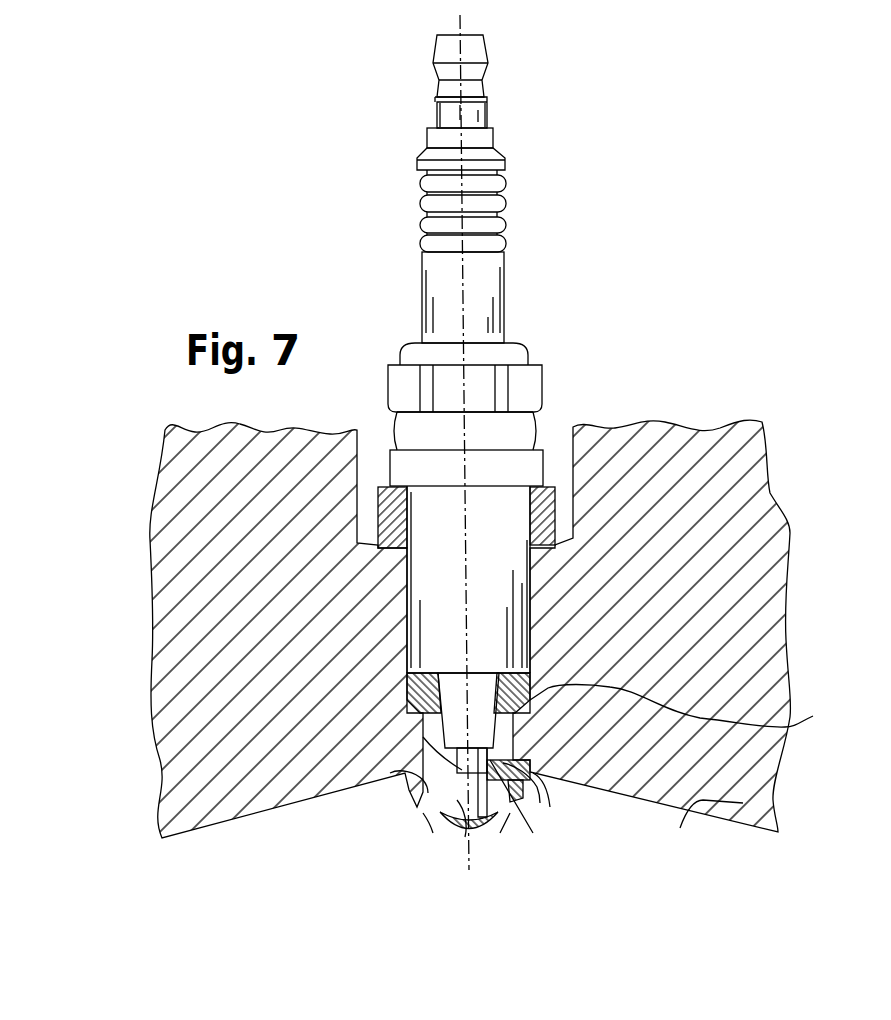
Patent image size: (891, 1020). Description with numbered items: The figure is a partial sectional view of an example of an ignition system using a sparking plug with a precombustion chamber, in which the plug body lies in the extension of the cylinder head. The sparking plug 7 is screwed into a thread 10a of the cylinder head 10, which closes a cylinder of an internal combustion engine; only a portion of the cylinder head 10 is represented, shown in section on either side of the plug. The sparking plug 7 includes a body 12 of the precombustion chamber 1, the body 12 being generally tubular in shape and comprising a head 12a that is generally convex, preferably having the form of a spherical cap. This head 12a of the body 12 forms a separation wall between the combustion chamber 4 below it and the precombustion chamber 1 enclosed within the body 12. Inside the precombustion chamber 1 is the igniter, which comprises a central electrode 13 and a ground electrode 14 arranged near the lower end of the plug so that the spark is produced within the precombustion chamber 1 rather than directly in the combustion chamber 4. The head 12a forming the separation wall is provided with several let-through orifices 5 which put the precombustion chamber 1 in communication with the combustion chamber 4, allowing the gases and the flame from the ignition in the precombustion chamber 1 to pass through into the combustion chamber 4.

The precombustion chamber 1 is at (455, 822).
The combustion chamber 4 is at (705, 802).
The let-through orifices 5 is at (426, 822).
The sparking plug 7 is at (449, 455).
The cylinder head 10 is at (778, 597).
The thread 10a is at (691, 707).
The body 12 is at (415, 788).
The head 12a is at (484, 831).
The central electrode 13 is at (462, 757).
The ground electrode 14 is at (531, 783).